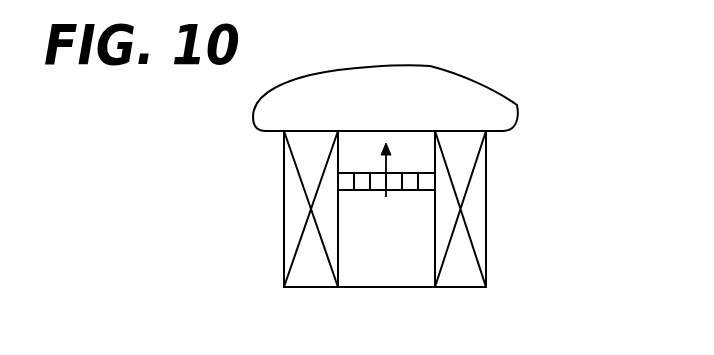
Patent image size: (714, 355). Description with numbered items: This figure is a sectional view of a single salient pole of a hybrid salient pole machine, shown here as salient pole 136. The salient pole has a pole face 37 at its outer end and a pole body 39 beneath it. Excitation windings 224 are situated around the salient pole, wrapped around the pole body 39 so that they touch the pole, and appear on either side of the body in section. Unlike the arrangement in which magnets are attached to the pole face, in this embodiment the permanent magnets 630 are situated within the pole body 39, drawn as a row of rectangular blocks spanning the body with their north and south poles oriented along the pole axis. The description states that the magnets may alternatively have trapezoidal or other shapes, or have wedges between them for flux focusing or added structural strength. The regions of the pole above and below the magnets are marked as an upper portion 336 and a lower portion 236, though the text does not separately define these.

The salient pole 136 is at (520, 116).
The pole face 37 is at (488, 103).
The upper pole region 336 is at (410, 120).
The excitation winding 224 is at (475, 208).
The permanent magnet 630 is at (427, 177).
The lower pole region 236 is at (410, 252).
The pole body 39 is at (417, 270).